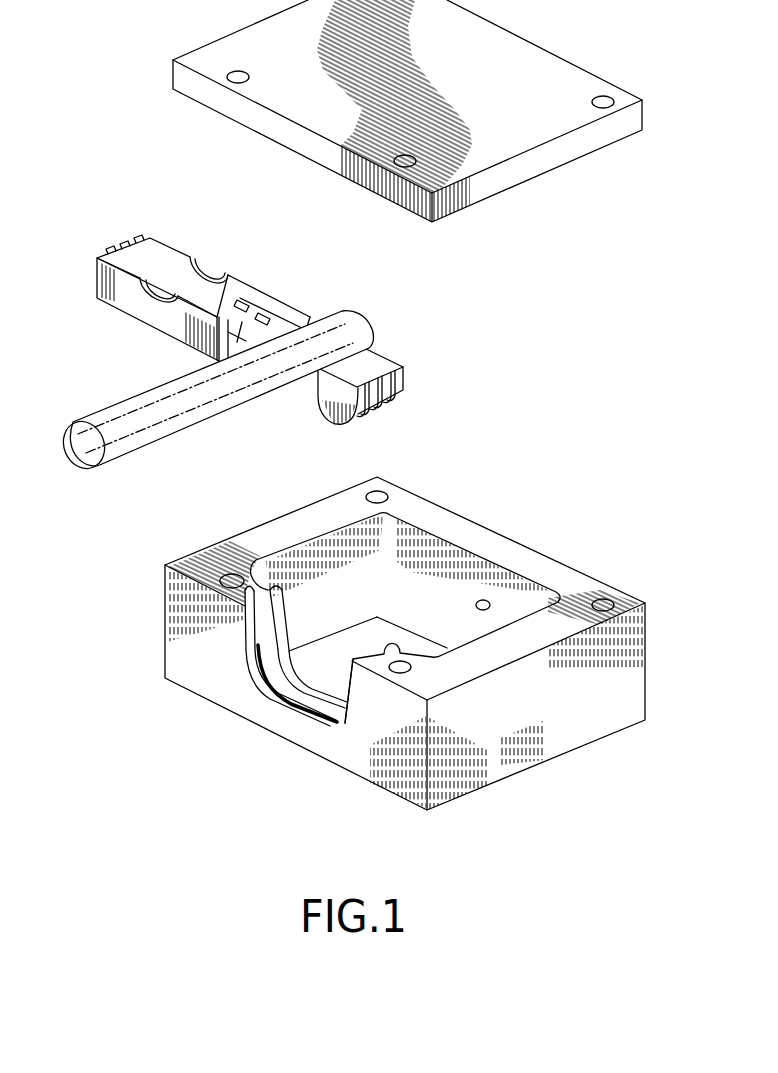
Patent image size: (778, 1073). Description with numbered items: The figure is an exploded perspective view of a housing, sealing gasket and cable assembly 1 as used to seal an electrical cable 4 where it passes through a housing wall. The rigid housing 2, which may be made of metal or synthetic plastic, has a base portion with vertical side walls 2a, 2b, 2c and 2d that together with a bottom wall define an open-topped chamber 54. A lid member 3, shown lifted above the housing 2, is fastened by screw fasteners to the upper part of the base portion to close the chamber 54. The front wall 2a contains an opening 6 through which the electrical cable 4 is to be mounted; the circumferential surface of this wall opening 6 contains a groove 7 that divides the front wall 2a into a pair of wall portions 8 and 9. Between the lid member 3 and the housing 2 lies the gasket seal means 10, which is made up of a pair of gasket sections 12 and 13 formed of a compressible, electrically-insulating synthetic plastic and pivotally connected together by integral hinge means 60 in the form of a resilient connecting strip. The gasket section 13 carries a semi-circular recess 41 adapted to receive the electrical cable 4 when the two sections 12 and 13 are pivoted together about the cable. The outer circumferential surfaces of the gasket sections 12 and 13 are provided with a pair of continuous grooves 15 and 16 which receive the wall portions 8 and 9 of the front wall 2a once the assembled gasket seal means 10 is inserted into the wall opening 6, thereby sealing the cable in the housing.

The sensor housing assembly 1 is at (416, 663).
The housing 2 is at (416, 663).
The front wall 2a is at (370, 733).
The side wall 2b is at (547, 570).
The side wall 2c is at (477, 660).
The side wall 2d is at (265, 542).
The lid member 3 is at (557, 153).
The electrical cable 4 is at (133, 415).
The wall opening 6 is at (272, 708).
The groove 7 is at (325, 717).
The wall portion 8 is at (290, 708).
The wall portion 9 is at (289, 651).
The gasket seal means 10 is at (240, 326).
The gasket section 12 is at (315, 400).
The gasket section 13 is at (171, 269).
The continuous groove 15 is at (110, 253).
The continuous groove 16 is at (137, 242).
The semi-circular recess 41 is at (197, 272).
The chamber 54 is at (437, 573).
The hinge means 60 is at (263, 297).